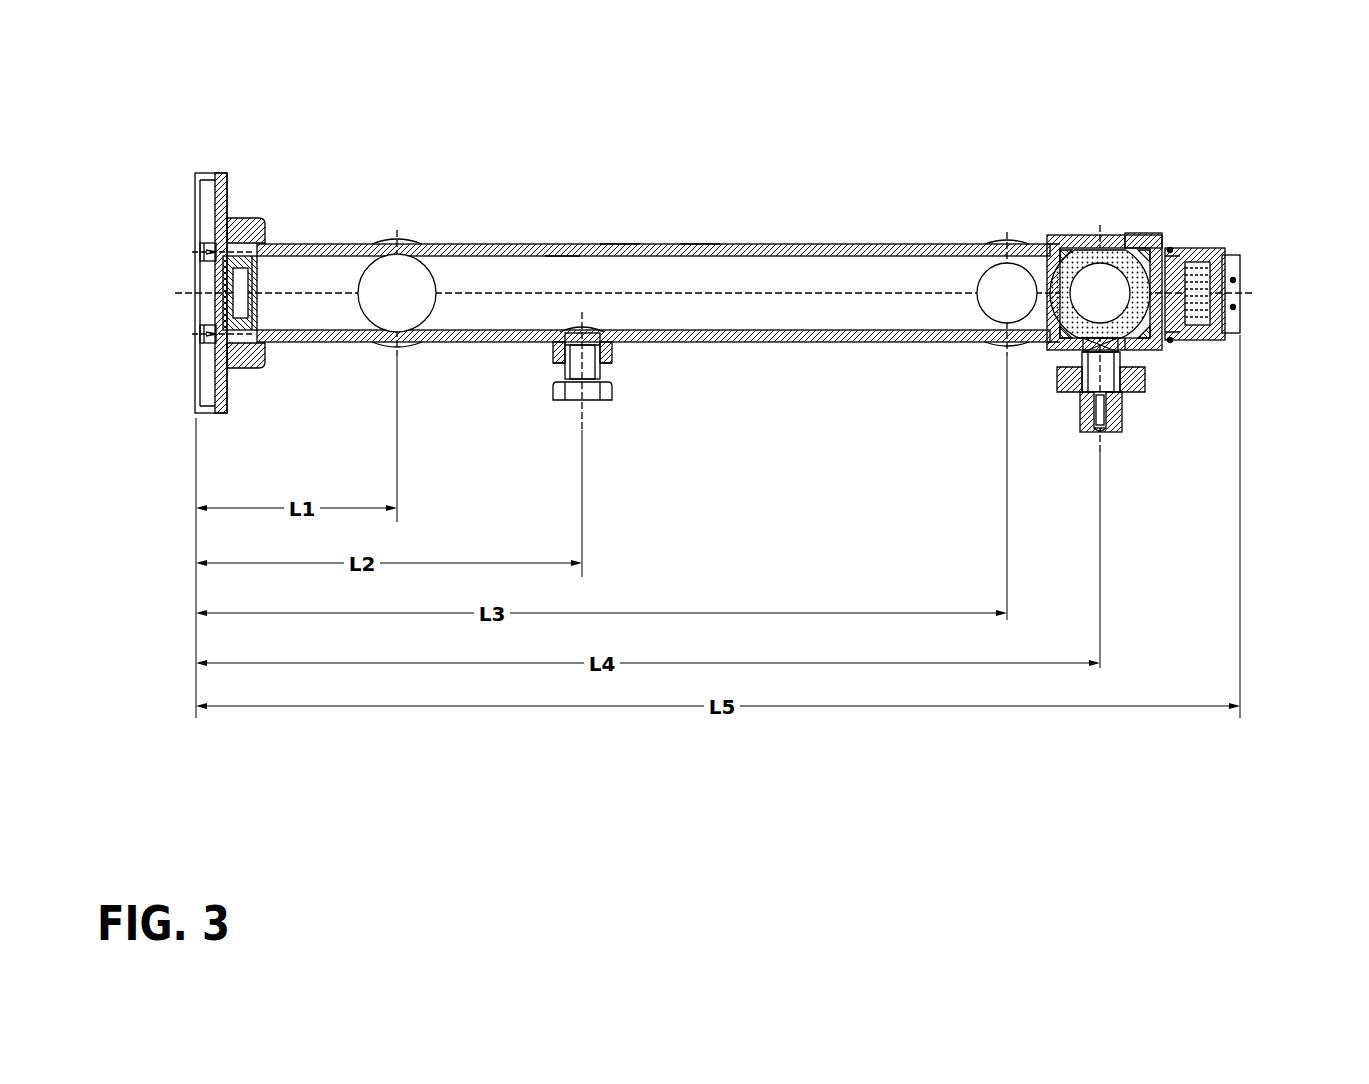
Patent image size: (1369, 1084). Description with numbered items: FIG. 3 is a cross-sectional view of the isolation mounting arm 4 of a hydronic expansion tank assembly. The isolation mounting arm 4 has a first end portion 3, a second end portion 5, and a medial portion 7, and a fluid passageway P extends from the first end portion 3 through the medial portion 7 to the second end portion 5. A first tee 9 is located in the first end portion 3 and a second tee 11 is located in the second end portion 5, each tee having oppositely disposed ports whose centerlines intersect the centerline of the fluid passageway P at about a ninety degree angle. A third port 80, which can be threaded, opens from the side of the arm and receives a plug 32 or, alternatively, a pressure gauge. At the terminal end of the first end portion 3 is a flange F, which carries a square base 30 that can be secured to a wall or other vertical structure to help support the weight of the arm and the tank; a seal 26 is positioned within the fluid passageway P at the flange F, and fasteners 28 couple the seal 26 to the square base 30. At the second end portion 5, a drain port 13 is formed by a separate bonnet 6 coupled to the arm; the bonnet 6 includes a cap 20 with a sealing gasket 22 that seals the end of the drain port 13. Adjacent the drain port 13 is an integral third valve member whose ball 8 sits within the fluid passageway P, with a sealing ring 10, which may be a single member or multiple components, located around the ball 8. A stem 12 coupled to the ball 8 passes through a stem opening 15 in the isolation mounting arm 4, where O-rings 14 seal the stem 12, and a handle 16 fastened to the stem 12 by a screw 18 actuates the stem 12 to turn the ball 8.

The first end portion 3 is at (317, 245).
The isolation mounting arm 4 is at (623, 245).
The second end portion 5 is at (1060, 250).
The bonnet 6 is at (1164, 262).
The medial portion 7 is at (700, 248).
The ball 8 is at (1120, 253).
The first tee 9 is at (398, 293).
The sealing ring 10 is at (1062, 258).
The second tee 11 is at (980, 270).
The stem 12 is at (1122, 362).
The drain port 13 is at (1137, 257).
The O-rings 14 is at (1083, 358).
The stem opening 15 is at (1080, 352).
The handle 16 is at (1138, 392).
The screw 18 is at (1093, 430).
The cap 20 is at (1228, 268).
The sealing gasket 22 is at (1236, 270).
The seal 26 is at (217, 277).
The fasteners 28 is at (205, 252).
The square base 30 is at (207, 195).
The plug 32 is at (565, 385).
The third port 80 is at (610, 350).
The flange F is at (243, 230).
The fluid passageway P is at (562, 293).